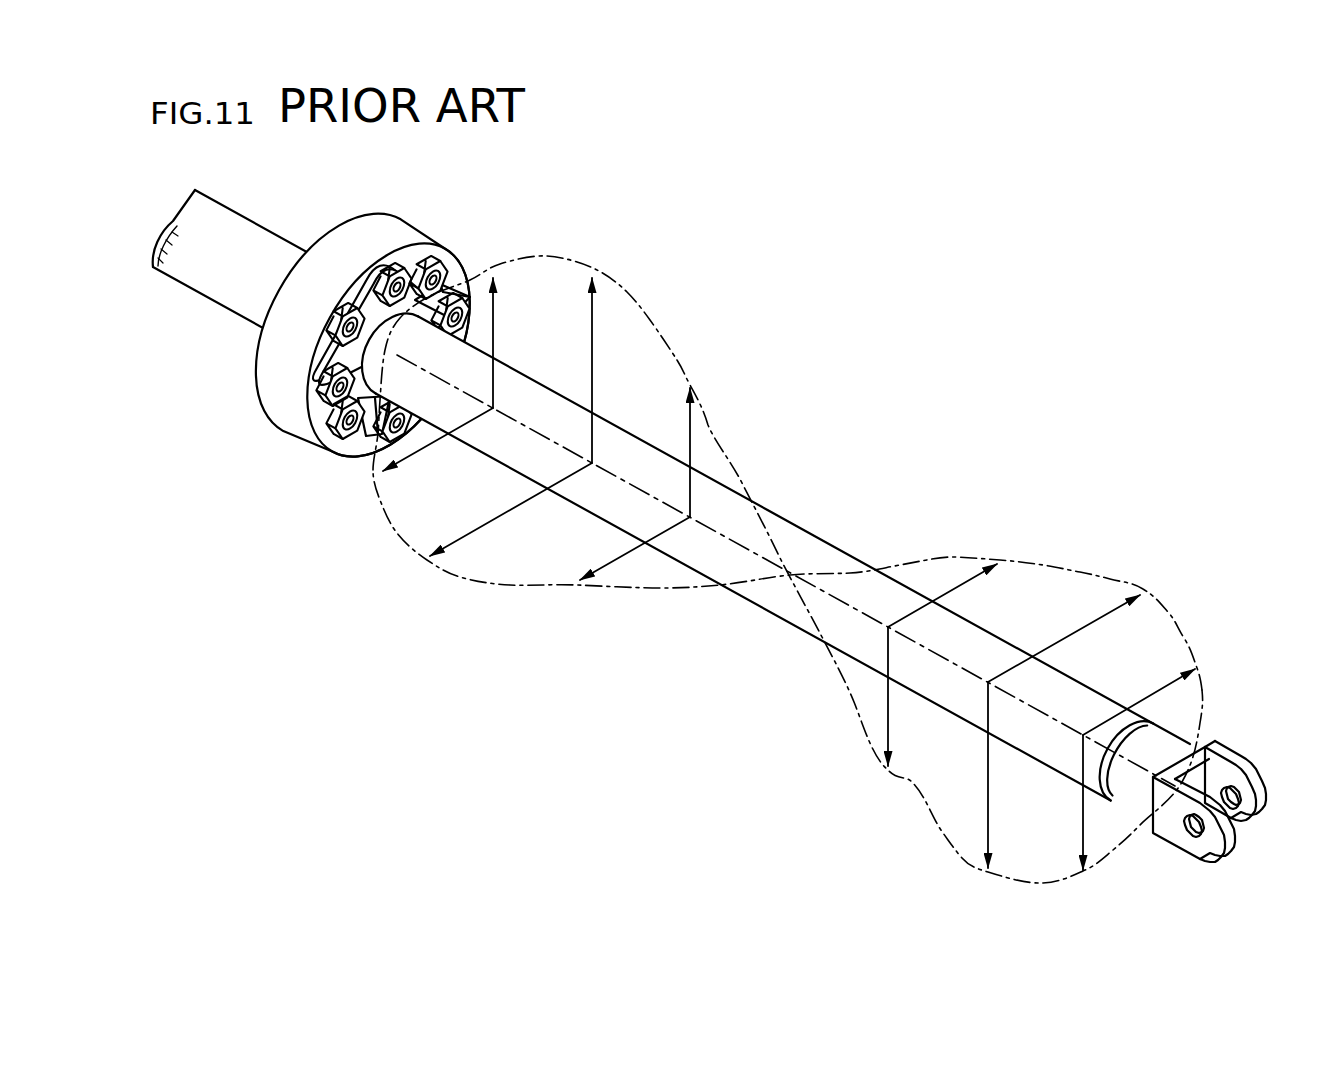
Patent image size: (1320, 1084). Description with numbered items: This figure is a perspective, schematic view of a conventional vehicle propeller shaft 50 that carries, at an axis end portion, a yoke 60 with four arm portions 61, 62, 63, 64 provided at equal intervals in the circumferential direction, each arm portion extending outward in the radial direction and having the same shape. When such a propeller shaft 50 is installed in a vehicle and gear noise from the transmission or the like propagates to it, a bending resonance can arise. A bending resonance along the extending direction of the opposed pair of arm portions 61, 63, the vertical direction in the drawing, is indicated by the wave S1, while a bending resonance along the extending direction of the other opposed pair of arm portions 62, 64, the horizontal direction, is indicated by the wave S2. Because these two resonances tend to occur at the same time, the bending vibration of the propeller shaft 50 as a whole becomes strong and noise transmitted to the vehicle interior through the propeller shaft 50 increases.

The propeller shaft 50 is at (808, 528).
The yoke 60 is at (383, 261).
The arm portion 61 is at (402, 270).
The arm portion 62 is at (307, 390).
The arm portion 63 is at (370, 453).
The arm portion 64 is at (462, 288).
The bending resonance wave S1 is at (650, 322).
The bending resonance wave S2 is at (507, 590).